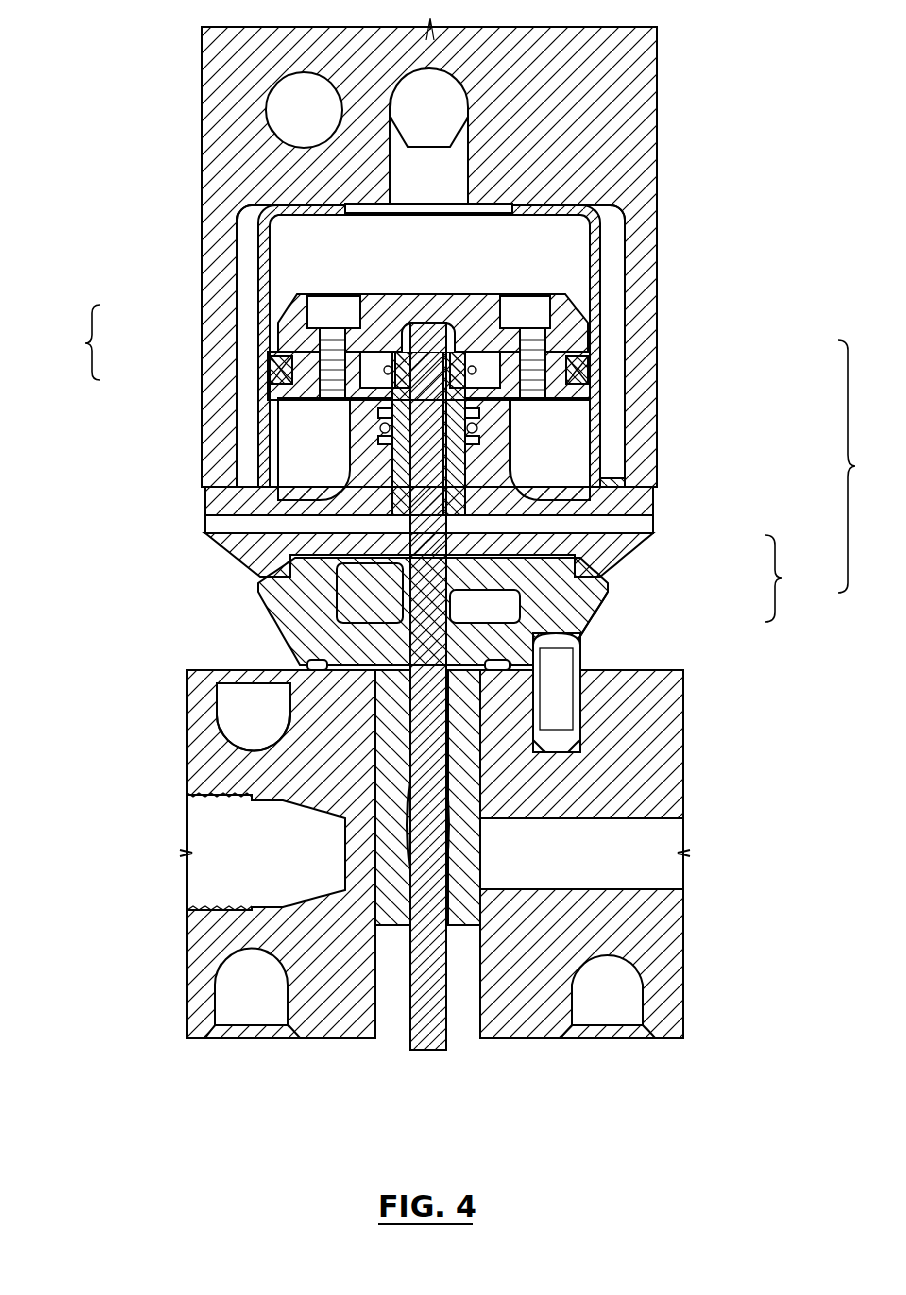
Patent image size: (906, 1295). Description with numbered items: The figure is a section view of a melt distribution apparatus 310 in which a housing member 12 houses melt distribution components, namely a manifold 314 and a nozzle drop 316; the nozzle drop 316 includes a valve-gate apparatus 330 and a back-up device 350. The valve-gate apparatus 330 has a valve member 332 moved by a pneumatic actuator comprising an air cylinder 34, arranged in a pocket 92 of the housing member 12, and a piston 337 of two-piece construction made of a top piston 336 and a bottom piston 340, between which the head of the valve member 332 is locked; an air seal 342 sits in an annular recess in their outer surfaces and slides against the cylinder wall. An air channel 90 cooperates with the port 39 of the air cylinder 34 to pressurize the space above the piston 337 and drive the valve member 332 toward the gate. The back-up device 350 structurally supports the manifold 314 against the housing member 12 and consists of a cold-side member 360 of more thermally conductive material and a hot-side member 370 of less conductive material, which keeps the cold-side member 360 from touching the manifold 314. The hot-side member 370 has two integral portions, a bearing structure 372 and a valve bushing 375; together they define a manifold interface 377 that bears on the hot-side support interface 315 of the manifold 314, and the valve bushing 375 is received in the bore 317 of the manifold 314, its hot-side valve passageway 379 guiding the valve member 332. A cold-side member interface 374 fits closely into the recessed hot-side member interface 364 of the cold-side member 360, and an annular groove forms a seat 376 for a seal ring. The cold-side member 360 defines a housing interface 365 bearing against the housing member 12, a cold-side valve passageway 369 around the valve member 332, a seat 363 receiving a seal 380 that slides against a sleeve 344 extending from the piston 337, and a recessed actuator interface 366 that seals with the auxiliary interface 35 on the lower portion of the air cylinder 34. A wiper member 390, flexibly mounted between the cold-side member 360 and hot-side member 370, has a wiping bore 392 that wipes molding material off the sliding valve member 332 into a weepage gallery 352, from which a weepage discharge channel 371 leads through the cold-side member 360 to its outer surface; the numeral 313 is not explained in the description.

The housing member 12 is at (643, 116).
The air channel 90 is at (446, 188).
The pocket 92 is at (617, 267).
The air cylinder 34 is at (270, 265).
The port 39 is at (500, 213).
The top piston 336 is at (283, 333).
The piston 337 is at (291, 352).
The bottom piston 340 is at (283, 390).
The air seal 342 is at (600, 368).
The valve-gate apparatus 330 is at (613, 373).
The nozzle drop 316 is at (872, 466).
The seal 380 is at (372, 423).
The seat 363 is at (380, 440).
The cold-side valve passageway 369 is at (393, 490).
The sleeve 344 is at (470, 455).
The actuator interface 366 is at (590, 493).
The housing interface 365 is at (635, 480).
The mounting plate 313 is at (642, 497).
The auxiliary interface 35 is at (652, 523).
The weepage discharge channel 371 is at (217, 523).
The cold-side member interface 374 is at (263, 565).
The cold-side member 360 is at (650, 550).
The wiper member 390 is at (487, 573).
The back-up device 350 is at (798, 578).
The hot-side member 370 is at (610, 605).
The hot-side member interface 364 is at (260, 583).
The wiping bore 392 is at (415, 538).
The weepage gallery 352 is at (500, 617).
The hot-side support interface 315 is at (333, 657).
The seat 376 is at (327, 667).
The bearing structure 372 is at (562, 615).
The manifold interface 377 is at (323, 685).
The valve bushing 375 is at (488, 768).
The hot-side valve passageway 379 is at (448, 815).
The manifold 314 is at (322, 1017).
The bore 317 is at (490, 888).
The valve member 332 is at (486, 703).
The melt distribution apparatus 310 is at (778, 1102).